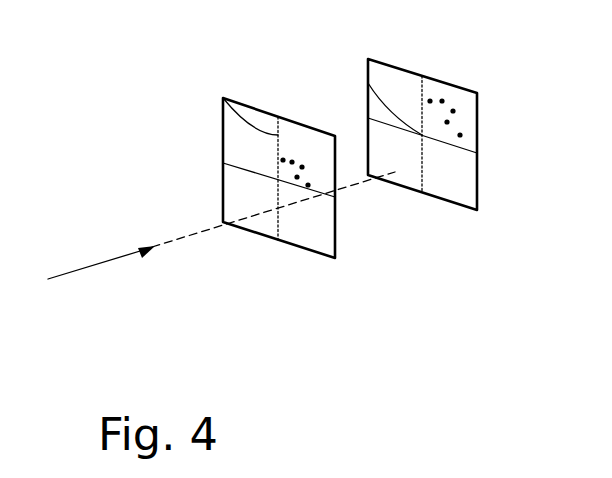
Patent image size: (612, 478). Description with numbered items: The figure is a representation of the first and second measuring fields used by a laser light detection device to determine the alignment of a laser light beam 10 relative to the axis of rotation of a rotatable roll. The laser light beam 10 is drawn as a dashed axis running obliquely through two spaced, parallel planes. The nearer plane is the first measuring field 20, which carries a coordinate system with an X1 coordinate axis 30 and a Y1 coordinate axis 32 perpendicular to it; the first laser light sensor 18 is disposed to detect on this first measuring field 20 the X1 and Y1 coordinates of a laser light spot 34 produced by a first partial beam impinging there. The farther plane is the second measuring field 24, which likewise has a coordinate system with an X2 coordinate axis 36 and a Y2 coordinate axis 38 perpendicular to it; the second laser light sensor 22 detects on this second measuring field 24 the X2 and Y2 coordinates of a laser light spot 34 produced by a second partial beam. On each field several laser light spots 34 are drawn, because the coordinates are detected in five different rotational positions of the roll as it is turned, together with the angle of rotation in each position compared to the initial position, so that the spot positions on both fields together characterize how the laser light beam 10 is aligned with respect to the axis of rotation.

The laser light beam 10 is at (108, 260).
The first laser light sensor 18 is at (206, 139).
The first measuring field 20 is at (327, 232).
The second laser light sensor 22 is at (489, 113).
The second measuring field 24 is at (462, 195).
The X1 coordinate axis 30 is at (290, 182).
The Y1 coordinate axis 32 is at (223, 98).
The laser light spot 34 is at (294, 158).
The X2 coordinate axis 36 is at (447, 147).
The Y2 coordinate axis 38 is at (368, 83).